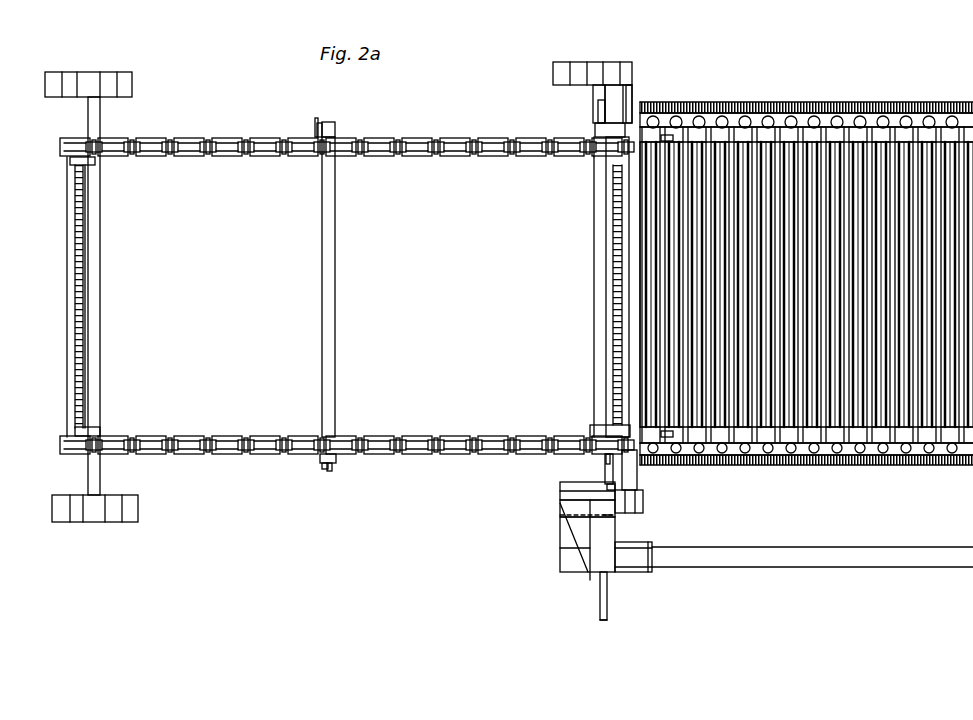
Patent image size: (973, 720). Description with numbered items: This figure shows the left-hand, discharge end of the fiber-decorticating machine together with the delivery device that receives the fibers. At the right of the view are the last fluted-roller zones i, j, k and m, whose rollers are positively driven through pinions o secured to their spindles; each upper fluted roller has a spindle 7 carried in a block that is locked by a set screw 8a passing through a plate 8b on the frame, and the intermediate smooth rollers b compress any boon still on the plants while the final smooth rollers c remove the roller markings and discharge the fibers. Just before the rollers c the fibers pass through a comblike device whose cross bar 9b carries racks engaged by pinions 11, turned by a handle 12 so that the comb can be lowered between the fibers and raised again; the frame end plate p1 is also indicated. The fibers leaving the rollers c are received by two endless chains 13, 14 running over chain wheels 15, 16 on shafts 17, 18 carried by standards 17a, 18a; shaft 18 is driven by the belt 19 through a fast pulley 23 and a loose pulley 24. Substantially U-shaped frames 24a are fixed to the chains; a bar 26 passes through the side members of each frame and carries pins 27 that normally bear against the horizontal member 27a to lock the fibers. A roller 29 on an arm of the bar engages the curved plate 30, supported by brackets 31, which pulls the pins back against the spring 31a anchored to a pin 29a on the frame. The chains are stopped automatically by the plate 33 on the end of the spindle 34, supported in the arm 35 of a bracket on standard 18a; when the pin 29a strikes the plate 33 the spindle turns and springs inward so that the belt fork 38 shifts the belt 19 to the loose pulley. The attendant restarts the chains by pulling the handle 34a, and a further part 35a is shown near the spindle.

The spindle 7 is at (715, 140).
The set screw 8a is at (752, 118).
The plate 8b is at (835, 118).
The cross bar 9b is at (665, 348).
The pinions 11 is at (670, 125).
The handle 12 is at (652, 470).
The endless chain 13 is at (132, 445).
The endless chain 14 is at (138, 148).
The chain wheel 15 is at (592, 152).
The chain wheel 16 is at (98, 162).
The shaft 17 is at (102, 124).
The standard 17a is at (92, 76).
The shaft 18 is at (594, 107).
The standard 18a is at (590, 68).
The belt 19 is at (748, 548).
The pulley 23 is at (563, 540).
The loose pulley 24 is at (568, 565).
The U shaped frame 24a is at (610, 160).
The bar 26 is at (86, 368).
The pins 27 is at (83, 242).
The horizontal member 27a is at (68, 182).
The roller 29 is at (336, 128).
The pin 29a is at (318, 125).
The curved plate 30 is at (632, 96).
The bracket 31 is at (632, 88).
The spring 31a is at (320, 120).
The plate 33 is at (566, 487).
The spindle 34 is at (600, 590).
The handle 34a is at (608, 616).
The arm 35 is at (562, 508).
The slide box pin 35a is at (622, 515).
The belt fork 38 is at (650, 574).
The smooth rollers c is at (650, 300).
The frame end plate p1 is at (698, 125).
The zone m is at (728, 458).
The pinions o is at (785, 440).
The zone k is at (812, 455).
The zone j is at (870, 440).
The zone i is at (915, 440).
The smooth rollers b is at (965, 415).